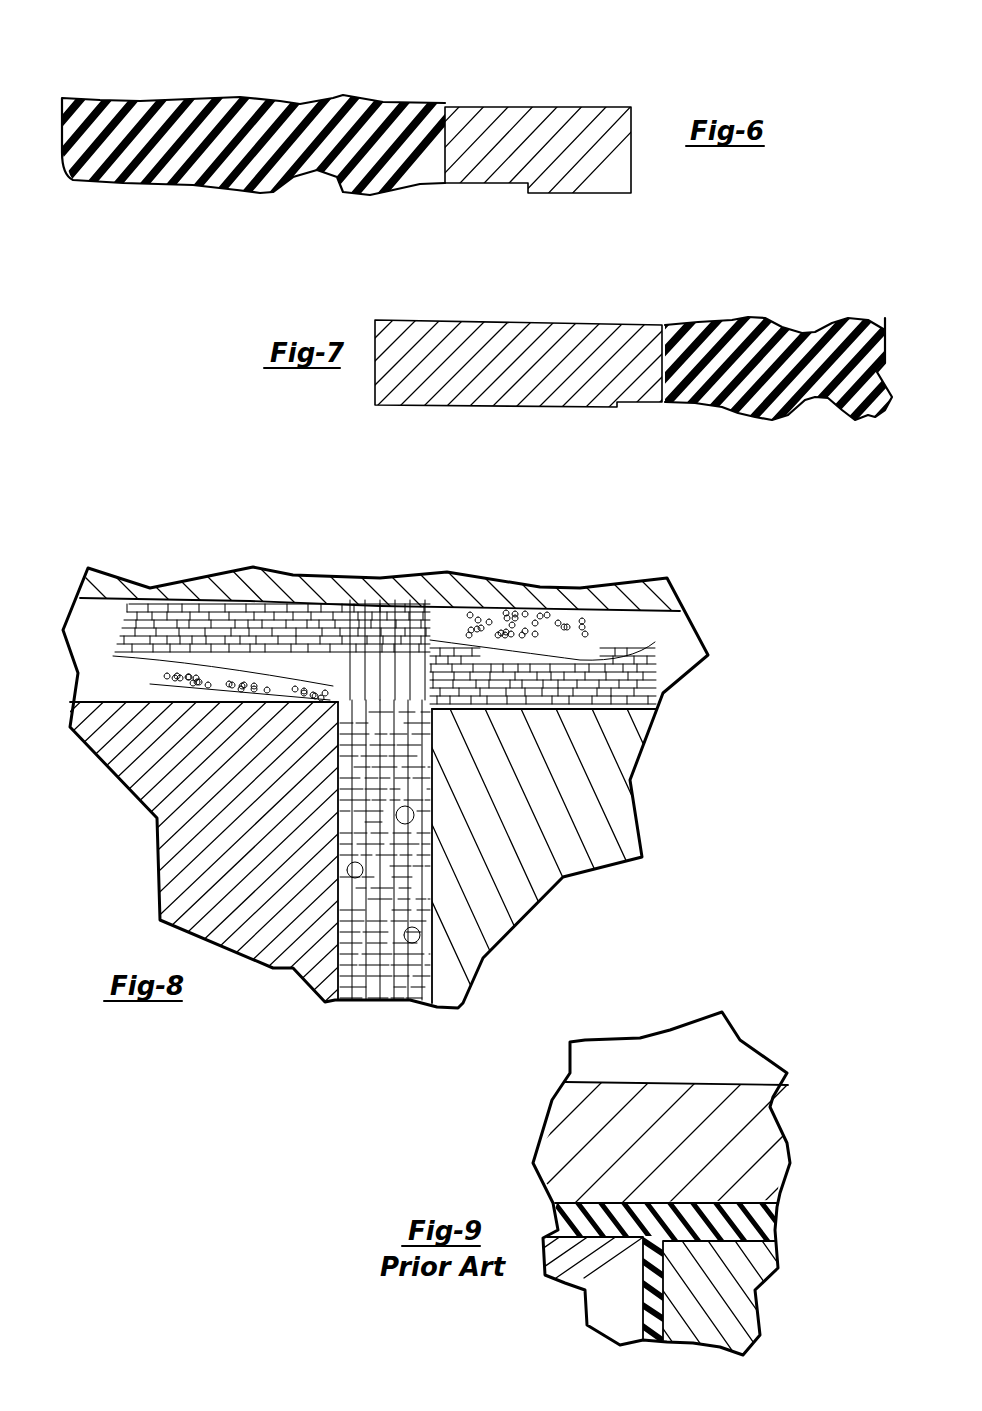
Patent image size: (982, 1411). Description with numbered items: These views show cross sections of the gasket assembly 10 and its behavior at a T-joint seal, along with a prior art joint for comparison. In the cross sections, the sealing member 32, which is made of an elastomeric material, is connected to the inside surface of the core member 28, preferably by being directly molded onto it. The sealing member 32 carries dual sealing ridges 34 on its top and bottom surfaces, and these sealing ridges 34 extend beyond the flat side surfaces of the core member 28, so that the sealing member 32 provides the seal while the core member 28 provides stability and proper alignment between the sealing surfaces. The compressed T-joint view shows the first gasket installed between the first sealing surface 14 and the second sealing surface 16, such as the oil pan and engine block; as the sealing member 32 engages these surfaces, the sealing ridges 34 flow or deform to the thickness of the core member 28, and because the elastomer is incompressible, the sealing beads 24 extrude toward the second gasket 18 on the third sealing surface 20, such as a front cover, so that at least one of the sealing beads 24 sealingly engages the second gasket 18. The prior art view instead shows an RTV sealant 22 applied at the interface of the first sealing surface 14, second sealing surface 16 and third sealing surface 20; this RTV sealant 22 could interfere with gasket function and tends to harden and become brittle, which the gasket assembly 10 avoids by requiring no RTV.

In FIG. 8, the gasket assembly 10 is at (170, 542).
In FIG. 8, the first sealing surface 14 is at (200, 837).
In FIG. 9, the first sealing surface 14 is at (580, 1288).
In FIG. 8, the second sealing surface 16 is at (570, 780).
In FIG. 9, the second sealing surface 16 is at (713, 1303).
In FIG. 8, the second gasket 18 is at (583, 640).
In FIG. 8, the third sealing surface 20 is at (440, 590).
In FIG. 9, the third sealing surface 20 is at (668, 1188).
In FIG. 9, the RTV sealant 22 is at (673, 1207).
In FIG. 6, the sealing beads 24 is at (63, 106).
In FIG. 8, the sealing beads 24 is at (398, 693).
In FIG. 6, the core member 28 is at (558, 120).
In FIG. 7, the core member 28 is at (477, 335).
In FIG. 6, the sealing member 32 is at (125, 140).
In FIG. 7, the sealing member 32 is at (808, 358).
In FIG. 8, the sealing member 32 is at (437, 857).
In FIG. 6, the sealing ridges 34 is at (240, 97).
In FIG. 7, the sealing ridges 34 is at (760, 318).